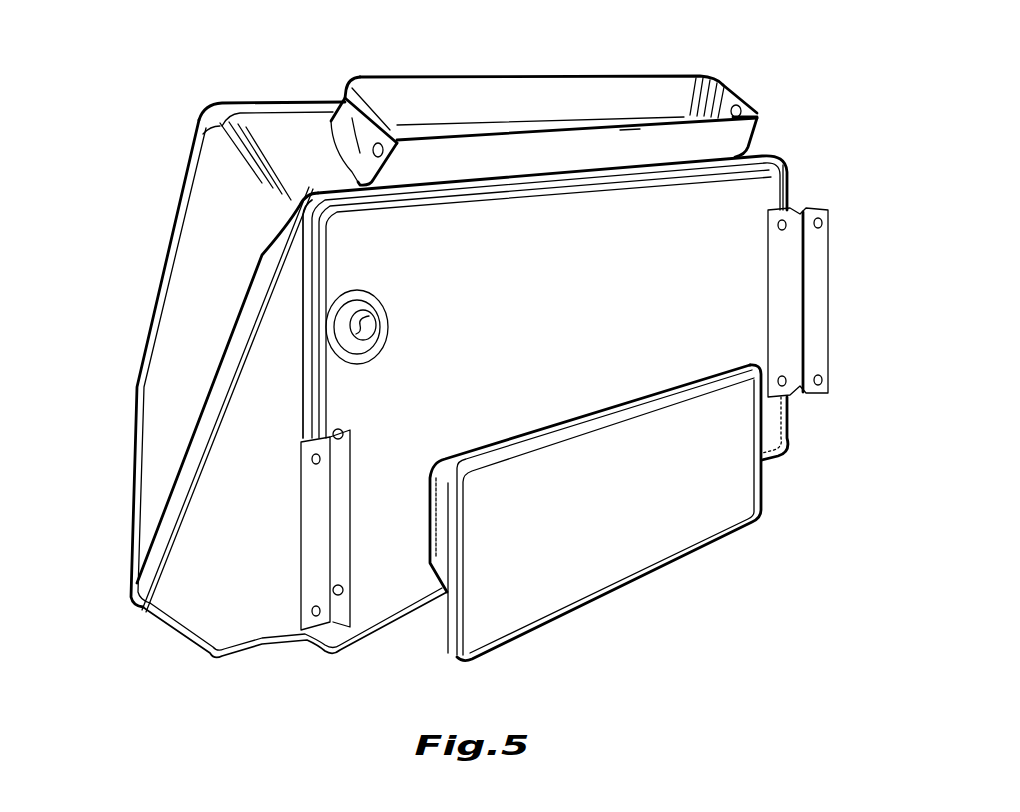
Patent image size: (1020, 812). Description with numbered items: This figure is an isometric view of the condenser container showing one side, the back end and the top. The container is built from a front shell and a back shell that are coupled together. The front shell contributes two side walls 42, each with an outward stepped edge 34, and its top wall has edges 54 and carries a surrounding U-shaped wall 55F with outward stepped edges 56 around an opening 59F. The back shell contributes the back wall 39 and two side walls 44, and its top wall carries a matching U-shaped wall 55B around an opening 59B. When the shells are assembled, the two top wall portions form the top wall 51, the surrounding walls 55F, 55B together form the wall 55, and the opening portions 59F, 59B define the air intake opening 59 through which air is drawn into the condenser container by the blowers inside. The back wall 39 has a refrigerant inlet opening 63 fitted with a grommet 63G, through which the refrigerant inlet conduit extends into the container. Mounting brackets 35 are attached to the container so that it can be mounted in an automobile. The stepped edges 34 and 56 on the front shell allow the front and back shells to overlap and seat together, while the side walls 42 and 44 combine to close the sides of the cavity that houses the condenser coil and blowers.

The top wall 51 is at (263, 127).
The edges 54 is at (325, 186).
The surrounding wall 55 is at (718, 92).
The surrounding U-shaped wall 55F is at (347, 133).
The surrounding U-shaped wall 55B is at (741, 107).
The outward stepped edges 56 is at (383, 158).
The air intake opening 59 is at (570, 128).
The opening 59F is at (483, 103).
The opening 59B is at (620, 126).
The back wall 39 is at (653, 250).
The refrigerant inlet opening 63 is at (372, 310).
The grommet 63G is at (350, 318).
The side walls 42 is at (182, 383).
The outward stepped edges 34 is at (182, 480).
The side walls 44 is at (218, 583).
The mounting brackets 35 is at (300, 585).